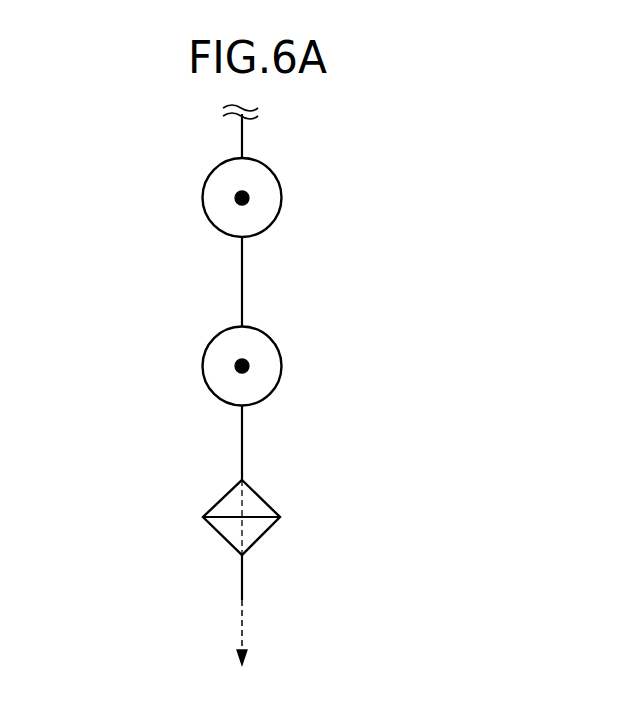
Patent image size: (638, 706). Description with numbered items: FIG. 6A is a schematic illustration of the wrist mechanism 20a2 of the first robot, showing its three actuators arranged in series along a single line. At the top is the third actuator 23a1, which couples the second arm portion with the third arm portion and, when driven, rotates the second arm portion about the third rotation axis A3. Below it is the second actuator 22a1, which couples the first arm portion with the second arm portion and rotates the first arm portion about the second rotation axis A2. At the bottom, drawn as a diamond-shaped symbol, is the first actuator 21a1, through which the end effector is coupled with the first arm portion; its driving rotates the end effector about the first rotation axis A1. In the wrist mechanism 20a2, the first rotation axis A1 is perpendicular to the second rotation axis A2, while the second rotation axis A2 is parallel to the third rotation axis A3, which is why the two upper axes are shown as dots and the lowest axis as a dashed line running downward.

The third actuator 23a1 is at (205, 182).
The second actuator 22a1 is at (205, 352).
The first actuator 21a1 is at (207, 509).
The third rotation axis A3 is at (250, 193).
The second rotation axis A2 is at (250, 364).
The first rotation axis A1 is at (245, 533).
The wrist mechanism 20a2 is at (319, 277).